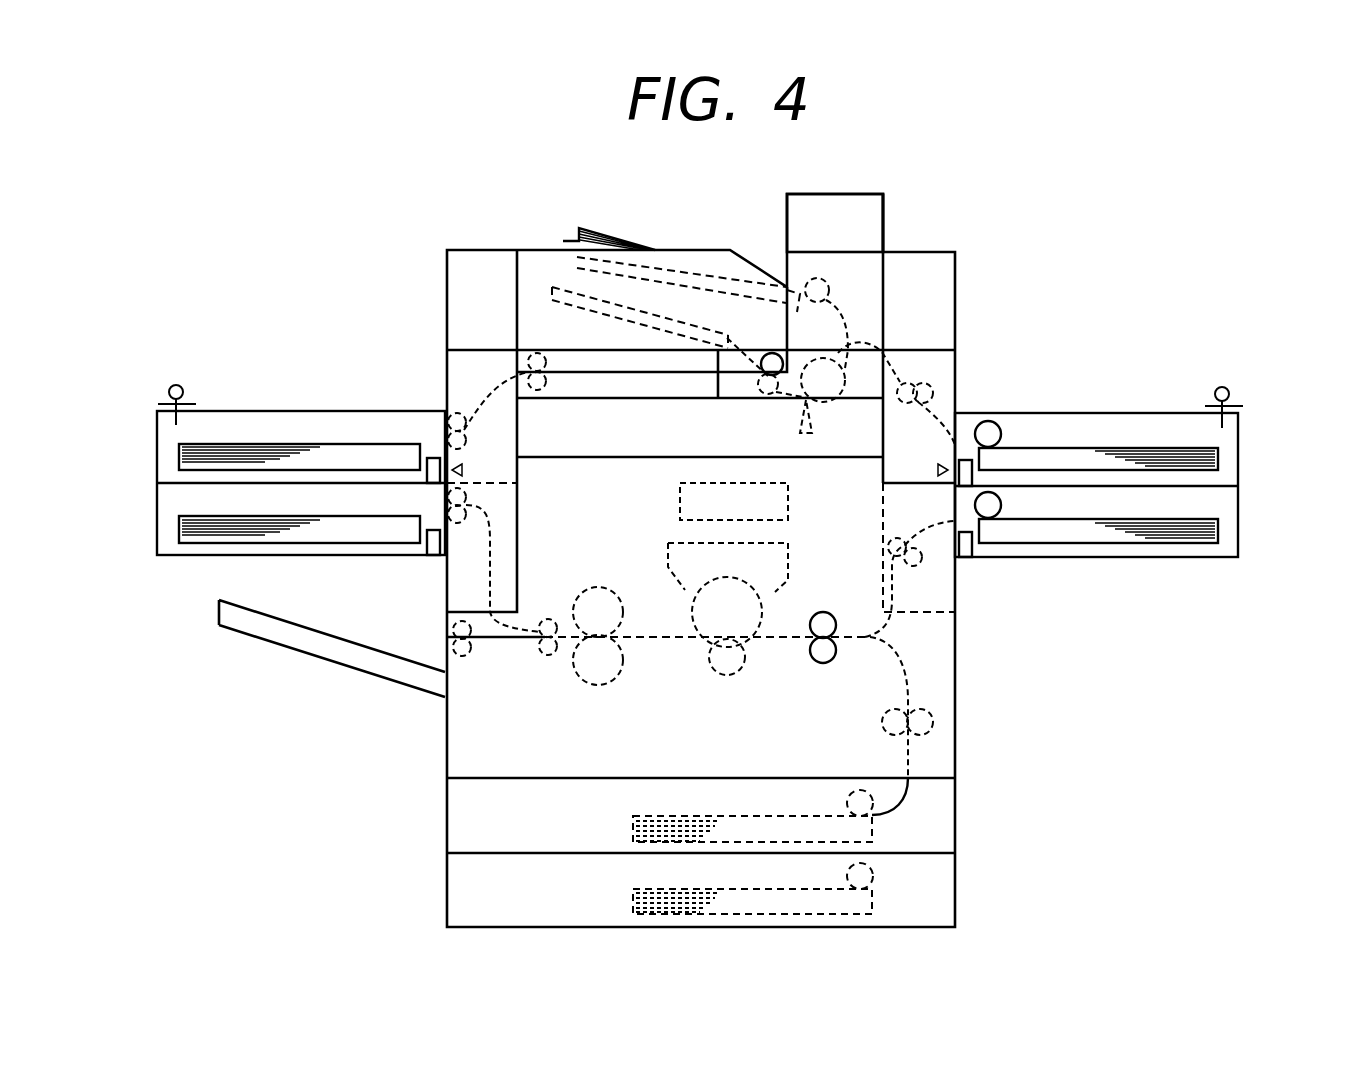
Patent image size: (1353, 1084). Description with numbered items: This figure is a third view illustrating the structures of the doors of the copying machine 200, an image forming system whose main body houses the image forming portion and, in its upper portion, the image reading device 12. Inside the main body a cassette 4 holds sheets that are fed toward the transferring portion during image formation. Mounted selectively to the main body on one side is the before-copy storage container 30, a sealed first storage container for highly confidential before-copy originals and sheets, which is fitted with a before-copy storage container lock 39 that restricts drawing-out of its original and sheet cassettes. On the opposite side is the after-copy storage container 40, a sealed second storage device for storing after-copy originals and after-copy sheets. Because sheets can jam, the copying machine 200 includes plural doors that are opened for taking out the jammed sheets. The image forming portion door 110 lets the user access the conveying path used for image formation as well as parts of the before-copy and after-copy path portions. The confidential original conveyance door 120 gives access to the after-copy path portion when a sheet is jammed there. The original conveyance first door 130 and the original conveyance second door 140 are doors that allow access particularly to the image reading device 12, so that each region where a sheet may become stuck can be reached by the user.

The cassette 4 is at (935, 829).
The image reading device 12 is at (615, 345).
The before-copy storage container 30 is at (1088, 412).
The before-copy storage container lock 39 is at (1229, 391).
The after-copy storage container 40 is at (290, 410).
The image forming portion door 110 is at (932, 681).
The confidential original conveyance door 120 is at (668, 297).
The original conveyance first door 130 is at (598, 382).
The original conveyance second door 140 is at (860, 222).
The copying machine 200 is at (967, 298).